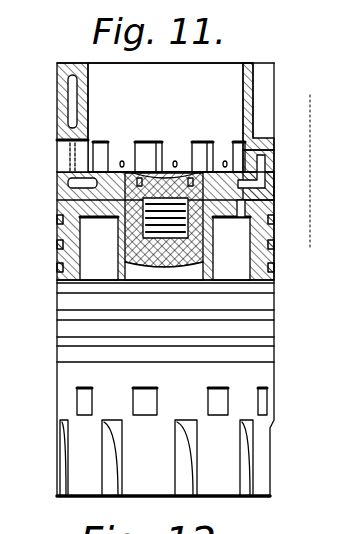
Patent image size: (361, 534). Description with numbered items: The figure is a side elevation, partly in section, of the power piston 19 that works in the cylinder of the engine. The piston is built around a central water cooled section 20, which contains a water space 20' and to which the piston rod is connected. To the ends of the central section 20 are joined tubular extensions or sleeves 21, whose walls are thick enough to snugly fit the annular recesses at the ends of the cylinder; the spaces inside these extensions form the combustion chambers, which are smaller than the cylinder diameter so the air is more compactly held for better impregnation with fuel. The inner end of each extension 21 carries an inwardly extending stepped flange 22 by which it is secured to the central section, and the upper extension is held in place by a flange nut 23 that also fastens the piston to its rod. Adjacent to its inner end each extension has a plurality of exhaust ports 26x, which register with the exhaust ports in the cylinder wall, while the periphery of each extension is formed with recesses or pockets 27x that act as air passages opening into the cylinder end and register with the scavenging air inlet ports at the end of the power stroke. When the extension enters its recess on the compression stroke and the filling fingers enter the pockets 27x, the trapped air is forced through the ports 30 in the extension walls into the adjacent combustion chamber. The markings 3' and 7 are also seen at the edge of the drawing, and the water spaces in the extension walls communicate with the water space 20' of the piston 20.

The tubular extension 21 is at (165, 117).
The exhaust port 26x is at (258, 393).
The recess or pocket 27x is at (260, 85).
The port or passage 30 is at (265, 148).
The stepped flange 22 is at (242, 200).
The central water cooled section 20 is at (186, 245).
The water space 20' is at (266, 274).
The flange nut 23 is at (138, 220).
The power piston 19 is at (146, 348).
The part 3' is at (10, 239).
The part 7 is at (3, 163).